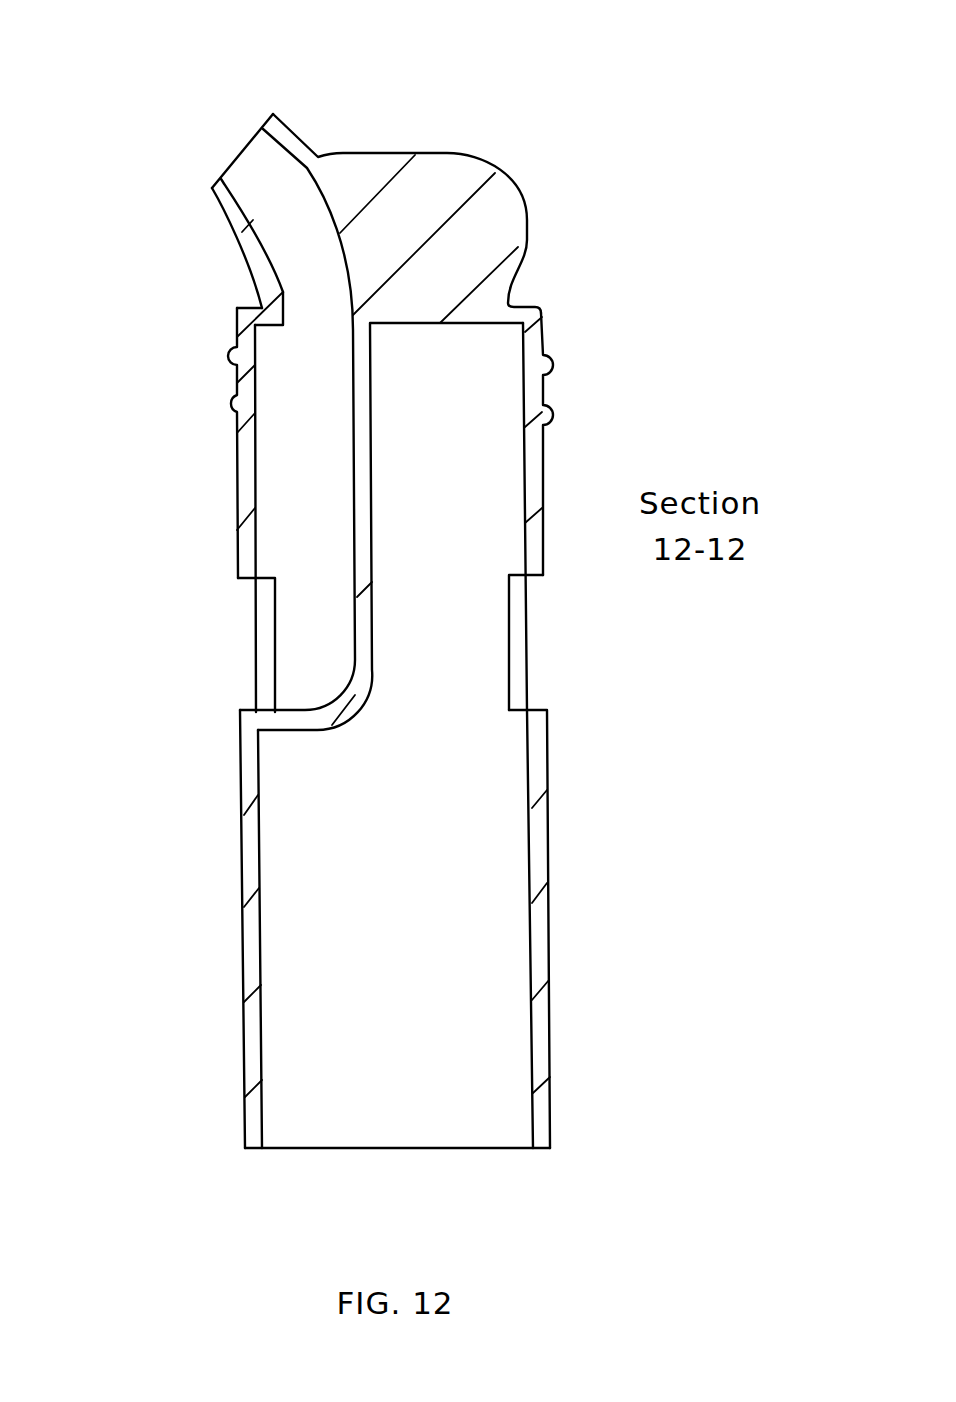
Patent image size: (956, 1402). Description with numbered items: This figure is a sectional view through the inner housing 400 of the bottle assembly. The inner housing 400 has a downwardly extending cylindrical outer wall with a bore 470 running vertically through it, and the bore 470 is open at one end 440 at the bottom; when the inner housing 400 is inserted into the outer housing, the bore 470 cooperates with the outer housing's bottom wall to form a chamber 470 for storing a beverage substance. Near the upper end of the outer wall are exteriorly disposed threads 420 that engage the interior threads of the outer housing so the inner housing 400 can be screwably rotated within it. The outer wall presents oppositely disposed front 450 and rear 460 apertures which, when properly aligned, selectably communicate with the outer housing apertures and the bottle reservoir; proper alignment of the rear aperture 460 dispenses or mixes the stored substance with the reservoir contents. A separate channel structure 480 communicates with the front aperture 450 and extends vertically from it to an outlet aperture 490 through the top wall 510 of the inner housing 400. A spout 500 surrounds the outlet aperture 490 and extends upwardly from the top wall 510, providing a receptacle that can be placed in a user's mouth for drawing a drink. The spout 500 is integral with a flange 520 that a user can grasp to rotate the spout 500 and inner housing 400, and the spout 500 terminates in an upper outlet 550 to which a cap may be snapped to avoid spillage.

The inner housing 400 is at (386, 100).
The exteriorly disposed threads 420 is at (612, 421).
The open end of bore 440 is at (478, 1148).
The front aperture 450 is at (255, 651).
The rear aperture 460 is at (529, 658).
The bore (chamber) 470 is at (365, 938).
The channel structure 480 is at (288, 492).
The outlet aperture 490 is at (318, 340).
The spout 500 is at (292, 240).
The top wall 510 is at (240, 308).
The flange 520 is at (483, 162).
The upper outlet 550 is at (216, 181).